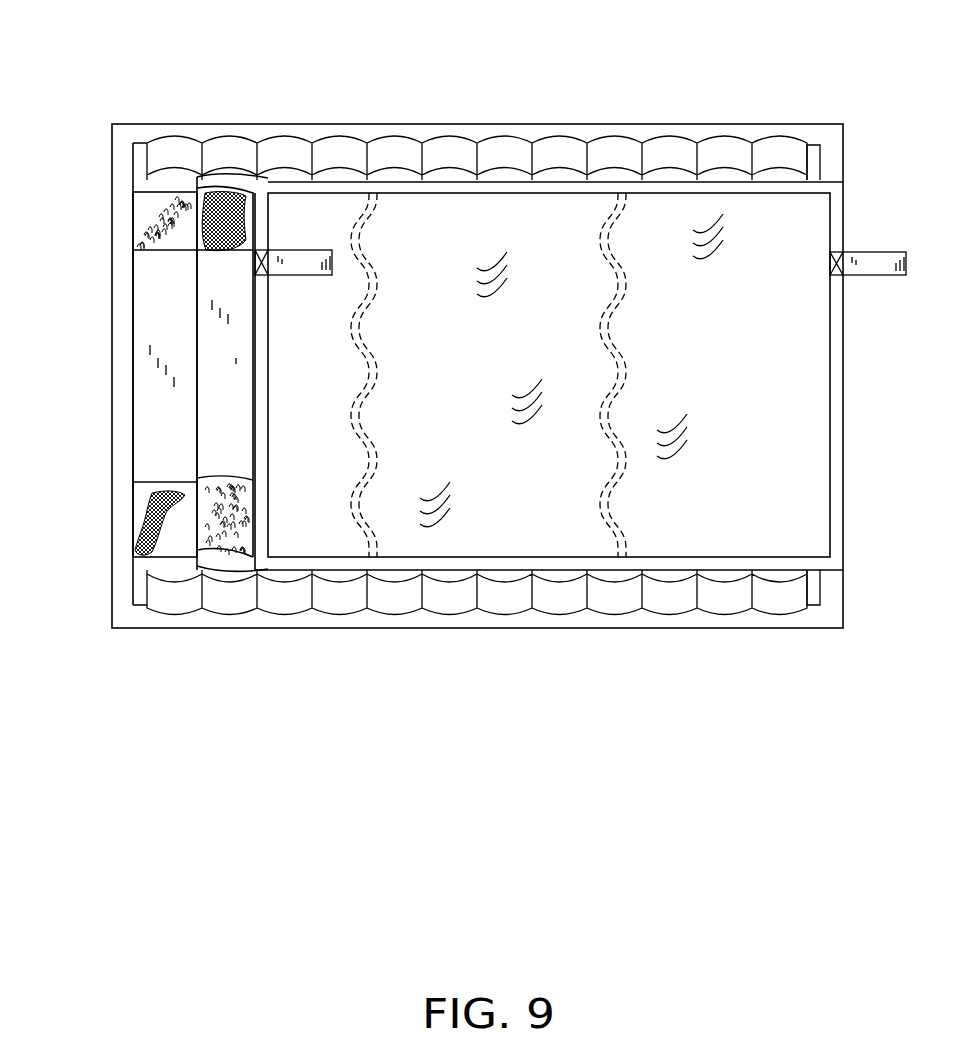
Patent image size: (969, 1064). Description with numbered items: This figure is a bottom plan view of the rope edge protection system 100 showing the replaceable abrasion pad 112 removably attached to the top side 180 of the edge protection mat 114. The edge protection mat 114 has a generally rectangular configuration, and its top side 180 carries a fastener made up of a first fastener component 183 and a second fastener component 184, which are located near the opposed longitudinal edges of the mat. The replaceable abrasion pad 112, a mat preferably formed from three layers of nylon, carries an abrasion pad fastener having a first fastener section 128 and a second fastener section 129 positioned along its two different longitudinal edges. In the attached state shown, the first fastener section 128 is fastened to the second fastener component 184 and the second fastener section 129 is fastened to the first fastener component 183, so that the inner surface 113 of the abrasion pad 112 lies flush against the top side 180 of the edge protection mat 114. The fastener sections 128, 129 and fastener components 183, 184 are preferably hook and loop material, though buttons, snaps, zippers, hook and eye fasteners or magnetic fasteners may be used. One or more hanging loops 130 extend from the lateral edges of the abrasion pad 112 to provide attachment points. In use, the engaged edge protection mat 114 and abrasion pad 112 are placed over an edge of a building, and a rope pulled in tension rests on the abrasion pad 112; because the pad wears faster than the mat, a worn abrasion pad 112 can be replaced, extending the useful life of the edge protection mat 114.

The rope edge protection system 100 is at (133, 90).
The edge protection mat 114 is at (758, 125).
The replaceable abrasion pad 112 is at (773, 355).
The hanging loop 130 is at (332, 277).
The top side 180 is at (107, 374).
The first fastener component 183 is at (145, 212).
The second fastener component 184 is at (148, 507).
The inner surface 113 is at (267, 373).
The second fastener section 129 is at (247, 213).
The first fastener section 128 is at (243, 538).